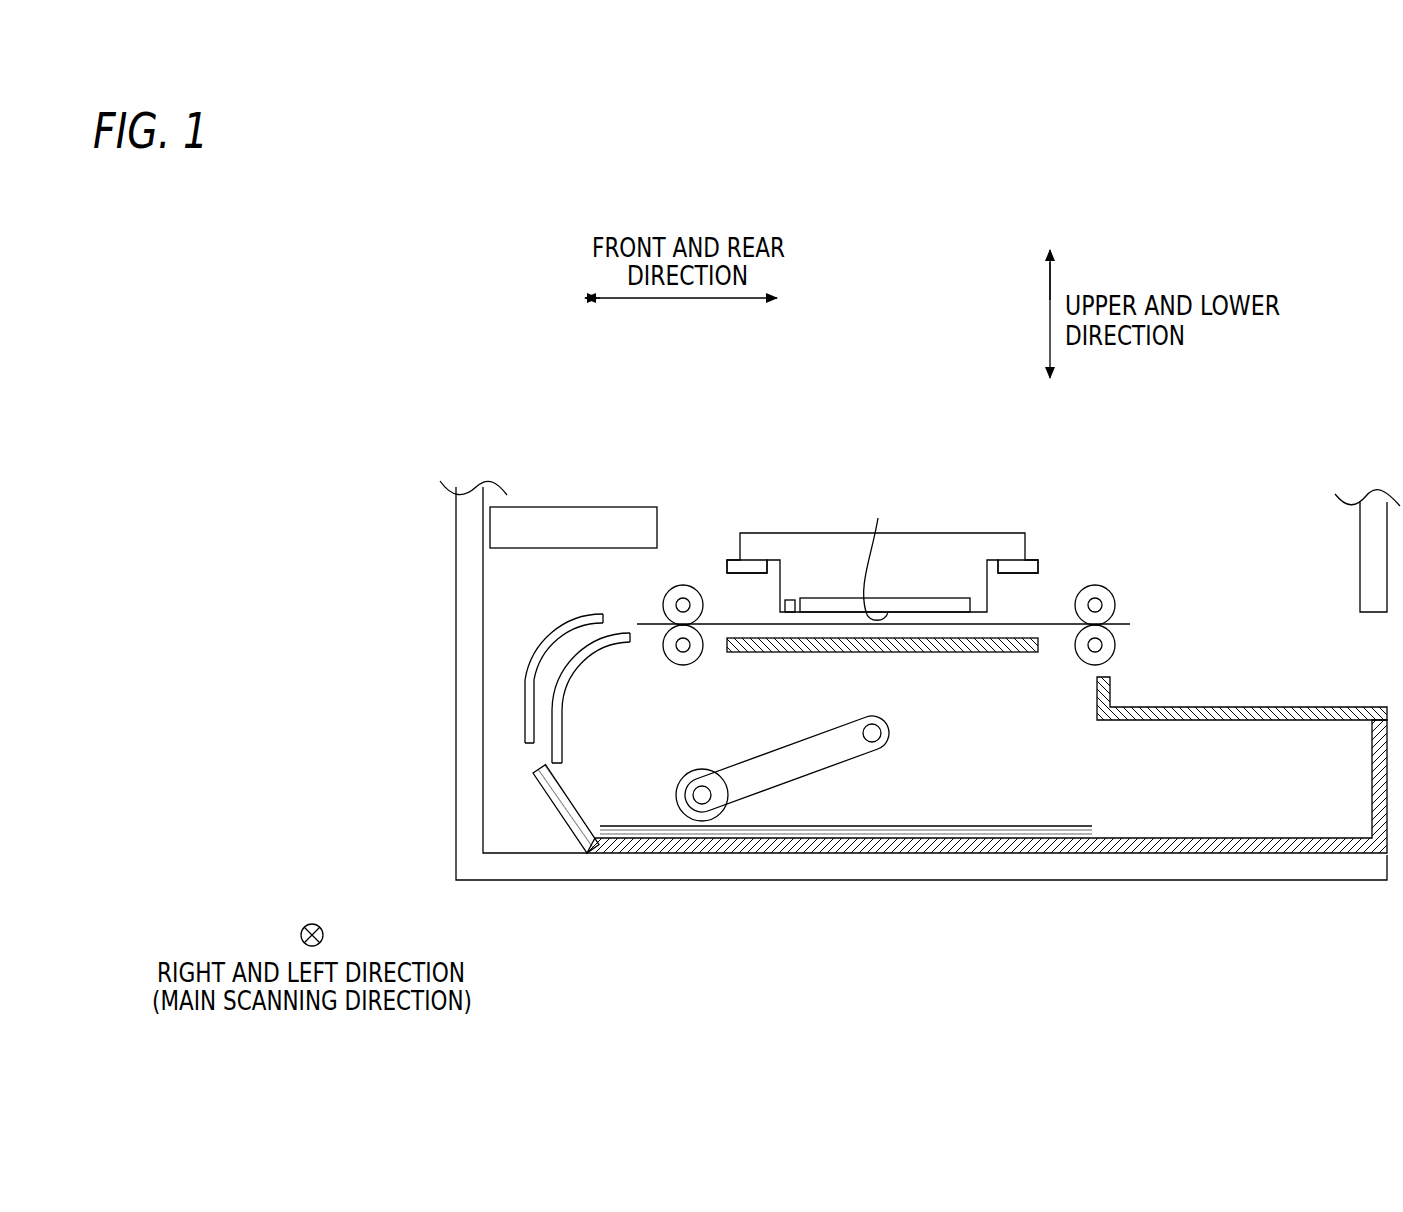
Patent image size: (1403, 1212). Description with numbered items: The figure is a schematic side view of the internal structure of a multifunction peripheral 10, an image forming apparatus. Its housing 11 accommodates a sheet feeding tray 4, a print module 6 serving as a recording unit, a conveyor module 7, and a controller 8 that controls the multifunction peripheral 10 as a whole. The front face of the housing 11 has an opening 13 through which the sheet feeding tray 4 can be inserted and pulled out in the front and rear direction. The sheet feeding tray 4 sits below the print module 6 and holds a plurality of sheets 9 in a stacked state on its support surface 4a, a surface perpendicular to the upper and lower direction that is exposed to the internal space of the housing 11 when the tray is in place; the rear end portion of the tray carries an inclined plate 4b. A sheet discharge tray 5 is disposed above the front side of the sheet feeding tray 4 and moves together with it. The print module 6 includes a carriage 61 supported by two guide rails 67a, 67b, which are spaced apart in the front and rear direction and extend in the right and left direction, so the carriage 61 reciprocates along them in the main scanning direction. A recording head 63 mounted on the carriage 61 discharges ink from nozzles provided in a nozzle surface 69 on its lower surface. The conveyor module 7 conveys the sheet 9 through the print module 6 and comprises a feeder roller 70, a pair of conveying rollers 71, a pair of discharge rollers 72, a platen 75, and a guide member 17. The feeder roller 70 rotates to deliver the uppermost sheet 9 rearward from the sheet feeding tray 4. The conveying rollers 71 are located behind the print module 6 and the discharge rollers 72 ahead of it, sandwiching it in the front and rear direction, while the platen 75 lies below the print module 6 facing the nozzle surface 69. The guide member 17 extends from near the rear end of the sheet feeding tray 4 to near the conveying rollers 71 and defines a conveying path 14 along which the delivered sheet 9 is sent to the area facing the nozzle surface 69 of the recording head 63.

The multifunction peripheral 10 is at (326, 258).
The housing 11 is at (462, 738).
The opening 13 is at (1373, 612).
The controller 8 is at (575, 507).
The conveying path 14 is at (552, 638).
The guide member 17 is at (526, 676).
The conveyor module 7 is at (1195, 530).
The pair of conveying rollers 71 is at (685, 548).
The pair of discharge rollers 72 is at (1125, 556).
The platen 75 is at (1028, 638).
The sheet 9 is at (1130, 624).
The print module 6 is at (784, 496).
The carriage 61 is at (970, 540).
The recording head 63 is at (940, 598).
The guide rail 67a is at (735, 560).
The guide rail 67b is at (1038, 558).
The nozzle surface 69 is at (882, 554).
The feeder roller 70 is at (690, 808).
The sheet discharge tray 5 is at (1293, 707).
The sheet feeding tray 4 is at (1293, 838).
The support surface 4a is at (1215, 838).
The inclined plate 4b is at (568, 835).